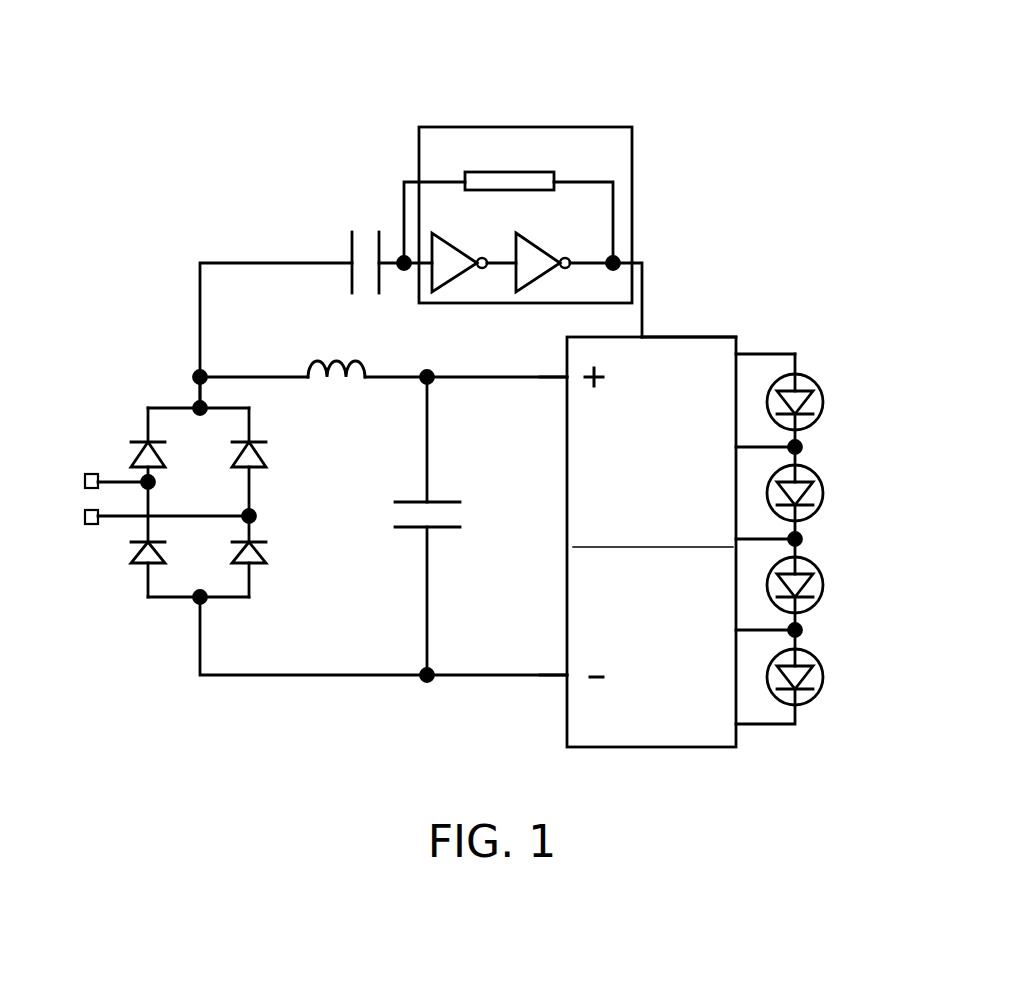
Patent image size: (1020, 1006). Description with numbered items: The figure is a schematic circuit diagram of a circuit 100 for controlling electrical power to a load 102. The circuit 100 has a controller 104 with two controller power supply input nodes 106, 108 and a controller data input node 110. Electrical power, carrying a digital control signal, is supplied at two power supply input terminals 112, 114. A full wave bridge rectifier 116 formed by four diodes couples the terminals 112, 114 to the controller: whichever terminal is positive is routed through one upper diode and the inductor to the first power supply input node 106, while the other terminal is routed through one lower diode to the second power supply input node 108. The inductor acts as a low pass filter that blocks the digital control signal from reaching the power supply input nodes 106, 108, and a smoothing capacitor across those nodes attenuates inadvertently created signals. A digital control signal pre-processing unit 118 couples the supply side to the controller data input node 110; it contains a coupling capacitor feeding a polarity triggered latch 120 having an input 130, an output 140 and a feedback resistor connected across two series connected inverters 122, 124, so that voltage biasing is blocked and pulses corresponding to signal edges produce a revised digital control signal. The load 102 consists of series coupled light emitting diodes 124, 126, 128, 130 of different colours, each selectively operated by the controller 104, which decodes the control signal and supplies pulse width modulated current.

The circuit 100 is at (337, 771).
The load 102 is at (847, 318).
The controller 104 is at (637, 461).
The controller power supply input node 106 is at (565, 376).
The controller power supply input node 108 is at (565, 674).
The controller data input node 110 is at (643, 336).
The power supply input terminal 112 is at (88, 474).
The power supply input terminal 114 is at (88, 523).
The full wave bridge rectifier 116 is at (159, 657).
The digital control signal pre-processing unit 118 is at (282, 105).
The polarity triggered latch 120 is at (578, 127).
The inverter 122 is at (443, 262).
The inverter 124 is at (527, 262).
The light emitting diode 126 is at (815, 495).
The light emitting diode 128 is at (815, 587).
The input 130 is at (403, 266).
The output 140 is at (620, 258).